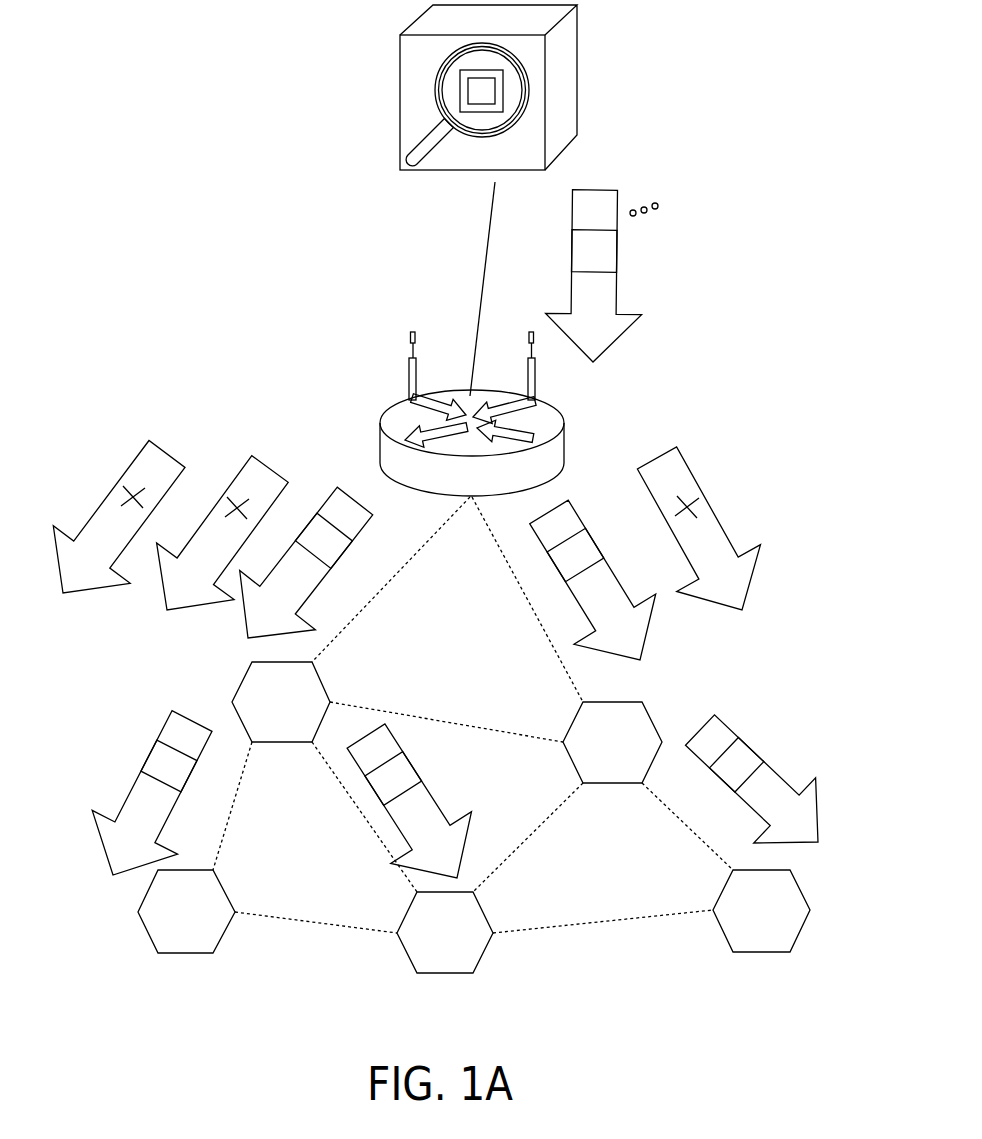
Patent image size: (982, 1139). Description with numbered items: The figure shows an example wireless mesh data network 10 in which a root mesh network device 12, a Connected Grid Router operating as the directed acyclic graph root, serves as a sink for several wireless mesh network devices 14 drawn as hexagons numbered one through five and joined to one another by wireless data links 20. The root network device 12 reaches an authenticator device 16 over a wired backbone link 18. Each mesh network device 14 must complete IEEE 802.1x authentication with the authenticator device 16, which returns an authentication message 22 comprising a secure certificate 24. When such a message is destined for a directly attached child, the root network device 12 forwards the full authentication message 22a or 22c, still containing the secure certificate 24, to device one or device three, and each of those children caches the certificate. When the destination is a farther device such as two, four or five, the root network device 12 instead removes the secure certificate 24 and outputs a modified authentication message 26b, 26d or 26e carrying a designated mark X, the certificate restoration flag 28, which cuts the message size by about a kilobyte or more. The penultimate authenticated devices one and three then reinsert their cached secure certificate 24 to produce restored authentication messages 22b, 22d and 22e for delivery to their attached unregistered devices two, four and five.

The wireless mesh data network 10 is at (170, 226).
The root mesh network device 12 is at (385, 445).
The wireless mesh network device 14 is at (248, 684).
The authenticator device 16 is at (563, 72).
The wired backbone link 18 is at (483, 265).
The wireless data link 20 is at (405, 575).
The authentication message 22 is at (600, 192).
The authentication message 22a is at (558, 517).
The restored authentication message 22b is at (722, 735).
The authentication message 22c is at (345, 524).
The restored authentication message 22d is at (390, 758).
The restored authentication message 22e is at (180, 730).
The secure certificate 24 is at (600, 252).
The modified authentication message 26b is at (670, 460).
The modified authentication message 26d is at (255, 470).
The modified authentication message 26e is at (152, 458).
The certificate restoration flag 28 is at (125, 500).